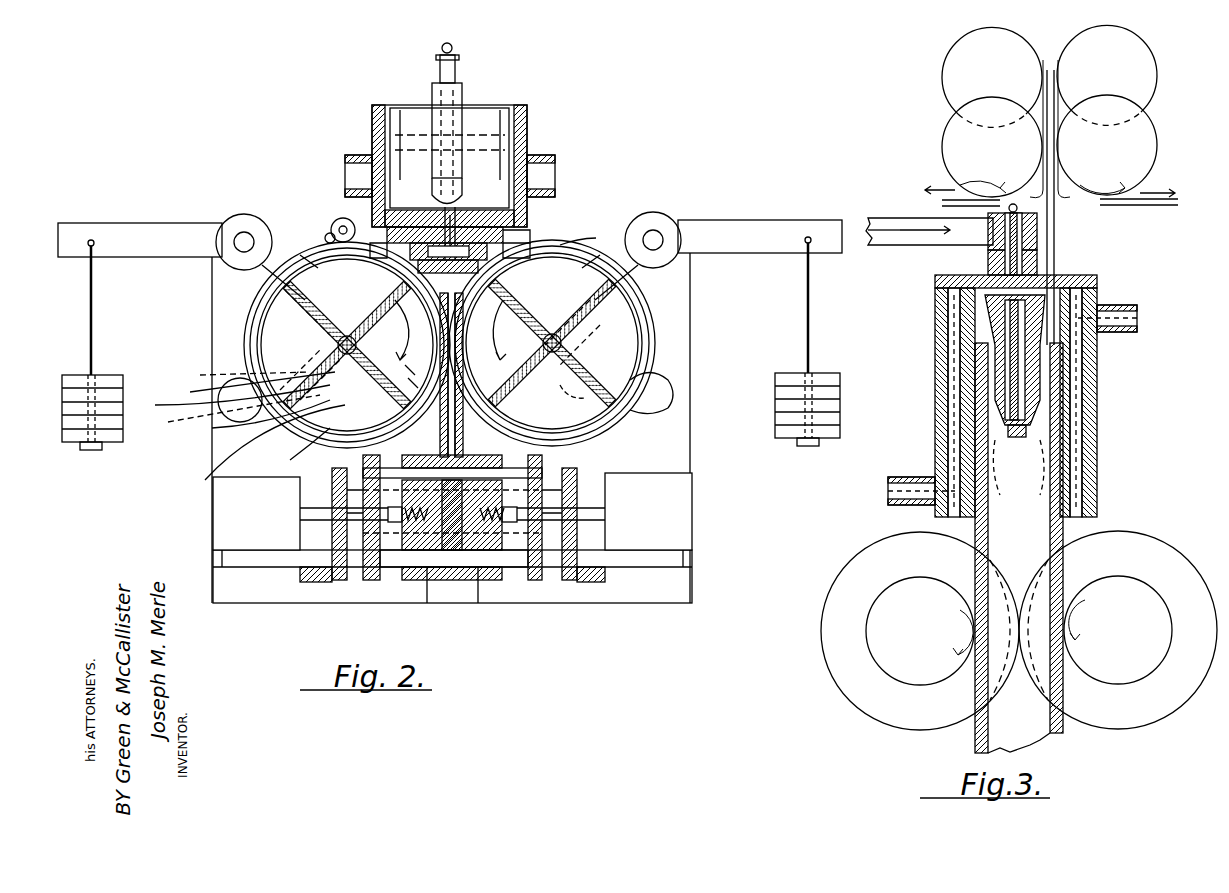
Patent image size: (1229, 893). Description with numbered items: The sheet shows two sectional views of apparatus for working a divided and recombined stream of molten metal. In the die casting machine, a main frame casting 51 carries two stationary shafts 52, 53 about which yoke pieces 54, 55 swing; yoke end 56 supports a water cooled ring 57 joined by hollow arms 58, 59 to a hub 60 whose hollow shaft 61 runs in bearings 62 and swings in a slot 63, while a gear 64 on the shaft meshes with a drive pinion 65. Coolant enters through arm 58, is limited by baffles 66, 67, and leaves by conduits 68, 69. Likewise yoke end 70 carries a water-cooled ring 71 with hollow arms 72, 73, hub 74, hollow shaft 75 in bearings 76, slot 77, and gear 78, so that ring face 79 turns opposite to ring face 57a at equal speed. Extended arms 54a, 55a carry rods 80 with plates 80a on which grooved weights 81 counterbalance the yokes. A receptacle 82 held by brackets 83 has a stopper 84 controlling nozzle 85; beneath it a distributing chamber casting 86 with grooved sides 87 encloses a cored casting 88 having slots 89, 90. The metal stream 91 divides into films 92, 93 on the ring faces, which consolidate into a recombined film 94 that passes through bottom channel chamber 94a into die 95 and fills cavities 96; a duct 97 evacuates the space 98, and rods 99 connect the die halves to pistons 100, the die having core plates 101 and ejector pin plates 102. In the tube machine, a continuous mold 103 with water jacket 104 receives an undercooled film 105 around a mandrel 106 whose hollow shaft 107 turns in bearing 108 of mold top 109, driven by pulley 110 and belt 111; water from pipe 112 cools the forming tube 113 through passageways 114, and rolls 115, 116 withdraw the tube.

In FIG. 2, the main frame casting 51 is at (226, 437).
In FIG. 2, the stationary shaft 52 is at (240, 232).
In FIG. 2, the stationary shaft 53 is at (655, 232).
In FIG. 2, the yoke piece 54 is at (251, 222).
In FIG. 2, the extended arm 54a is at (132, 228).
In FIG. 2, the yoke piece 55 is at (640, 224).
In FIG. 2, the extended arm 55a is at (780, 226).
In FIG. 2, the yoke end 56 is at (244, 371).
In FIG. 2, the water cooled ring 57 is at (245, 330).
In FIG. 2, the ring face 57a is at (274, 423).
In FIG. 2, the hollow arm 58 is at (262, 312).
In FIG. 2, the hollow arm 59 is at (232, 413).
In FIG. 2, the hub 60 is at (338, 345).
In FIG. 2, the hollow shaft 61 is at (251, 386).
In FIG. 2, the bearings 62 is at (350, 335).
In FIG. 2, the slot 63 is at (231, 399).
In FIG. 2, the gear 64 is at (336, 222).
In FIG. 2, the pinion or gear 65 is at (325, 235).
In FIG. 2, the baffle 66 is at (265, 447).
In FIG. 2, the baffle 67 is at (395, 274).
In FIG. 2, the conduit 68 is at (260, 418).
In FIG. 2, the conduit 69 is at (318, 402).
In FIG. 2, the yoke end 70 is at (555, 360).
In FIG. 2, the water-cooled ring 71 is at (636, 326).
In FIG. 2, the hollow arm 72 is at (578, 340).
In FIG. 2, the hollow arm 73 is at (655, 392).
In FIG. 2, the hub 74 is at (575, 353).
In FIG. 2, the hollow shaft 75 is at (556, 332).
In FIG. 2, the bearings 76 is at (548, 335).
In FIG. 2, the slot 77 is at (652, 410).
In FIG. 2, the gear 78 is at (522, 240).
In FIG. 2, the ring face 79 is at (580, 252).
In FIG. 2, the rod 80 is at (810, 318).
In FIG. 2, the plate 80a is at (824, 446).
In FIG. 2, the grooved weights 81 is at (840, 400).
In FIG. 2, the receptacle 82 is at (516, 107).
In FIG. 2, the brackets 83 is at (550, 158).
In FIG. 2, the stopper 84 is at (458, 95).
In FIG. 2, the nozzle 85 is at (444, 212).
In FIG. 2, the distributing chamber casting 86 is at (532, 217).
In FIG. 2, the recessed or grooved sides 87 is at (500, 125).
In FIG. 2, the cored casting 88 is at (448, 275).
In FIG. 2, the slot 89 is at (374, 245).
In FIG. 2, the slot 90 is at (476, 220).
In FIG. 2, the metal stream 91 is at (460, 228).
In FIG. 2, the film 92 is at (408, 330).
In FIG. 2, the film 93 is at (493, 330).
In FIG. 2, the recombined film or strip 94 is at (462, 430).
In FIG. 2, the bottom channel chamber 94a is at (442, 430).
In FIG. 2, the mold or die 95 is at (560, 492).
In FIG. 2, the cavities or impressions 96 is at (470, 545).
In FIG. 2, the duct or pipe 97 is at (414, 355).
In FIG. 2, the space 98 is at (415, 370).
In FIG. 2, the rod 99 is at (606, 510).
In FIG. 2, the air or hydraulic piston 100 is at (692, 500).
In FIG. 2, the core plates 101 is at (520, 562).
In FIG. 2, the ejector pin plates 102 is at (590, 580).
In FIG. 3, the continuous mold 103 is at (1098, 292).
In FIG. 3, the water jacket 104 is at (1085, 425).
In FIG. 3, the consolidated undercooled metal film 105 is at (1056, 236).
In FIG. 3, the mandrel 106 is at (1045, 360).
In FIG. 3, the hollow shaft 107 is at (1000, 297).
In FIG. 3, the bearing 108 is at (990, 266).
In FIG. 3, the mold top or cover 109 is at (938, 284).
In FIG. 3, the pulley 110 is at (960, 238).
In FIG. 3, the belt 111 is at (882, 226).
In FIG. 3, the pipe 112 is at (975, 209).
In FIG. 3, the tube 113 is at (1065, 538).
In FIG. 3, the passageways 114 is at (1005, 422).
In FIG. 3, the roll 115 is at (838, 628).
In FIG. 3, the roll 116 is at (1170, 562).